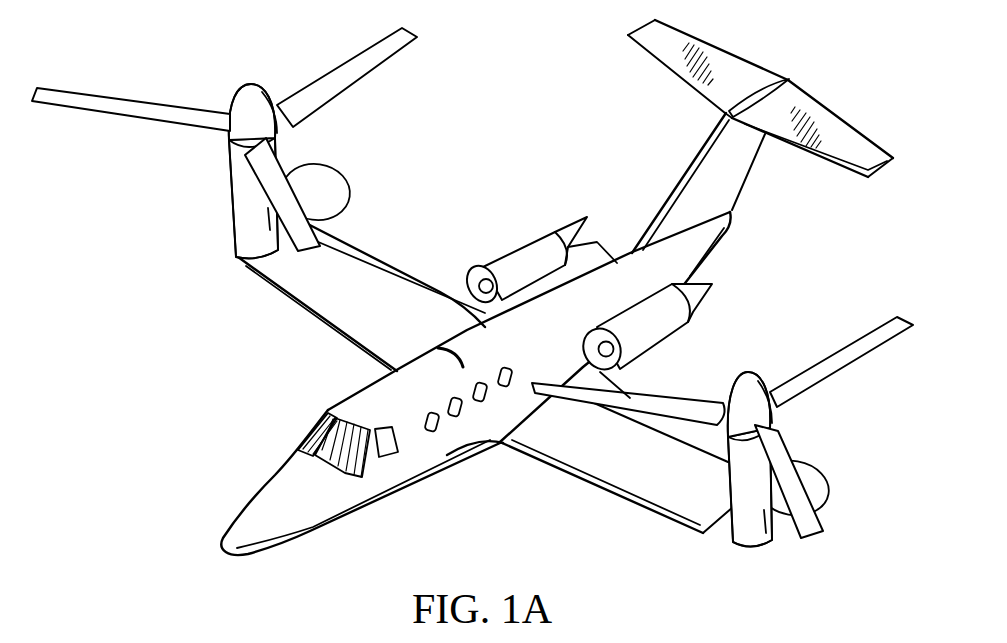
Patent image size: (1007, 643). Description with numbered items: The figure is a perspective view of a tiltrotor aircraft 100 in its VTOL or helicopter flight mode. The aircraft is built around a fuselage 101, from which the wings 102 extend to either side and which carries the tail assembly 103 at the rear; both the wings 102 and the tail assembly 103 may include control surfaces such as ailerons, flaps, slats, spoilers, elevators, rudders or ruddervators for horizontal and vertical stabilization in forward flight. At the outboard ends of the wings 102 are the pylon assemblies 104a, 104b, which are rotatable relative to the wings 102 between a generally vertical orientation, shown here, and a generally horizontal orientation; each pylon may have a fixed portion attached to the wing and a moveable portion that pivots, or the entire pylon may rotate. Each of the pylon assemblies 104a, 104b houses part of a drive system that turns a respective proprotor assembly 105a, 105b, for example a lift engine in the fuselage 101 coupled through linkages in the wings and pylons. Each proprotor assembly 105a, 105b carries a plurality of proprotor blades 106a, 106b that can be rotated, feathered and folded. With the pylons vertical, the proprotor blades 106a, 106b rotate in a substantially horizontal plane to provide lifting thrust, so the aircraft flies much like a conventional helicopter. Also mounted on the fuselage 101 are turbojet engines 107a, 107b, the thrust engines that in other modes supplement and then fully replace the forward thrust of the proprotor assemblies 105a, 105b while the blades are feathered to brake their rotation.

The tiltrotor aircraft 100 is at (478, 286).
The fuselage 101 is at (313, 522).
The wings 102 is at (373, 264).
The tail assembly 103 is at (733, 72).
The pylon assembly 104a is at (229, 196).
The pylon assembly 104b is at (728, 495).
The proprotor assembly 105a is at (224, 134).
The proprotor assembly 105b is at (722, 410).
The proprotor blades 106a is at (331, 75).
The proprotor blades 106b is at (850, 340).
The turbojet engine 107a is at (528, 223).
The turbojet engine 107b is at (664, 319).